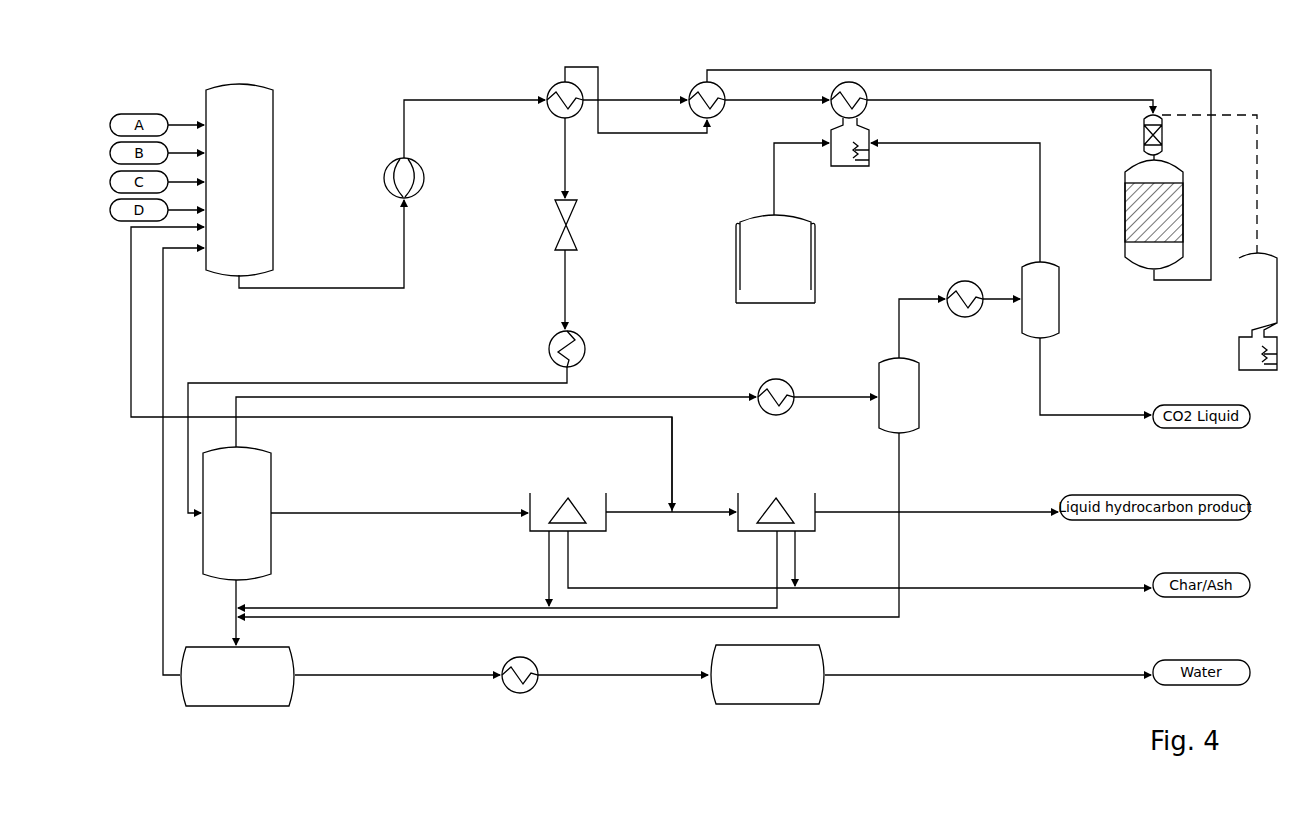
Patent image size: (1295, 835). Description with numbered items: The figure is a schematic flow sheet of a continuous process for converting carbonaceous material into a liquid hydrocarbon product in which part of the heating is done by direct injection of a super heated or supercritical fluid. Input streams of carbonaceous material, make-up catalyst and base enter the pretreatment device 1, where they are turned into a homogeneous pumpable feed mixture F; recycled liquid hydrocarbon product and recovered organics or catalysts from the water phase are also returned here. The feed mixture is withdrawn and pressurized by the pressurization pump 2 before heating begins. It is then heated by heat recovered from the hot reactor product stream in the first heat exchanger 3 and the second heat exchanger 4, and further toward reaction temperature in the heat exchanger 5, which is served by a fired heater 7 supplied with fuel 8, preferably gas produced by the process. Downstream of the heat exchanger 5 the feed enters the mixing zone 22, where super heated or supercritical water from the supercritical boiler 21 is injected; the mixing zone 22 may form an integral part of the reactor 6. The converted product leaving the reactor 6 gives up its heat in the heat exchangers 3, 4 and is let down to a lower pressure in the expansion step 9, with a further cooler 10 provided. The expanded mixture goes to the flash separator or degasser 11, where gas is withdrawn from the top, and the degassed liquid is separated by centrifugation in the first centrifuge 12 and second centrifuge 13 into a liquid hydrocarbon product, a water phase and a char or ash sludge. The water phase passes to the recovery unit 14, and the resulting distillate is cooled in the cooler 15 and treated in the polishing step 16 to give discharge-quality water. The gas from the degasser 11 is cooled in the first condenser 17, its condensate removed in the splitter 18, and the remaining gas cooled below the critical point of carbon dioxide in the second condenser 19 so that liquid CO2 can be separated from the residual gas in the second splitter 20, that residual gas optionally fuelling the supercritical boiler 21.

The pretreatment device 1 is at (273, 178).
The pressurization pump 2 is at (424, 182).
The first heat exchanger 3 is at (545, 92).
The second heat exchanger 4 is at (693, 82).
The heat exchanger 5 is at (866, 88).
The reactor 6 is at (1125, 212).
The fired heater 7 is at (866, 168).
The fuel 8 is at (735, 262).
The expansion step 9 is at (577, 210).
The cooler 10 is at (585, 345).
The flash separator or degasser 11 is at (271, 470).
The first centrifuge 12 is at (530, 493).
The second centrifuge 13 is at (815, 493).
The recovery unit 14 is at (265, 706).
The cooler 15 is at (520, 693).
The polishing step 16 is at (822, 695).
The first condenser 17 is at (776, 415).
The splitter 18 is at (919, 397).
The second condenser 19 is at (965, 282).
The second splitter 20 is at (1059, 300).
The supercritical boiler 21 is at (1240, 327).
The mixing zone 22 is at (1143, 125).